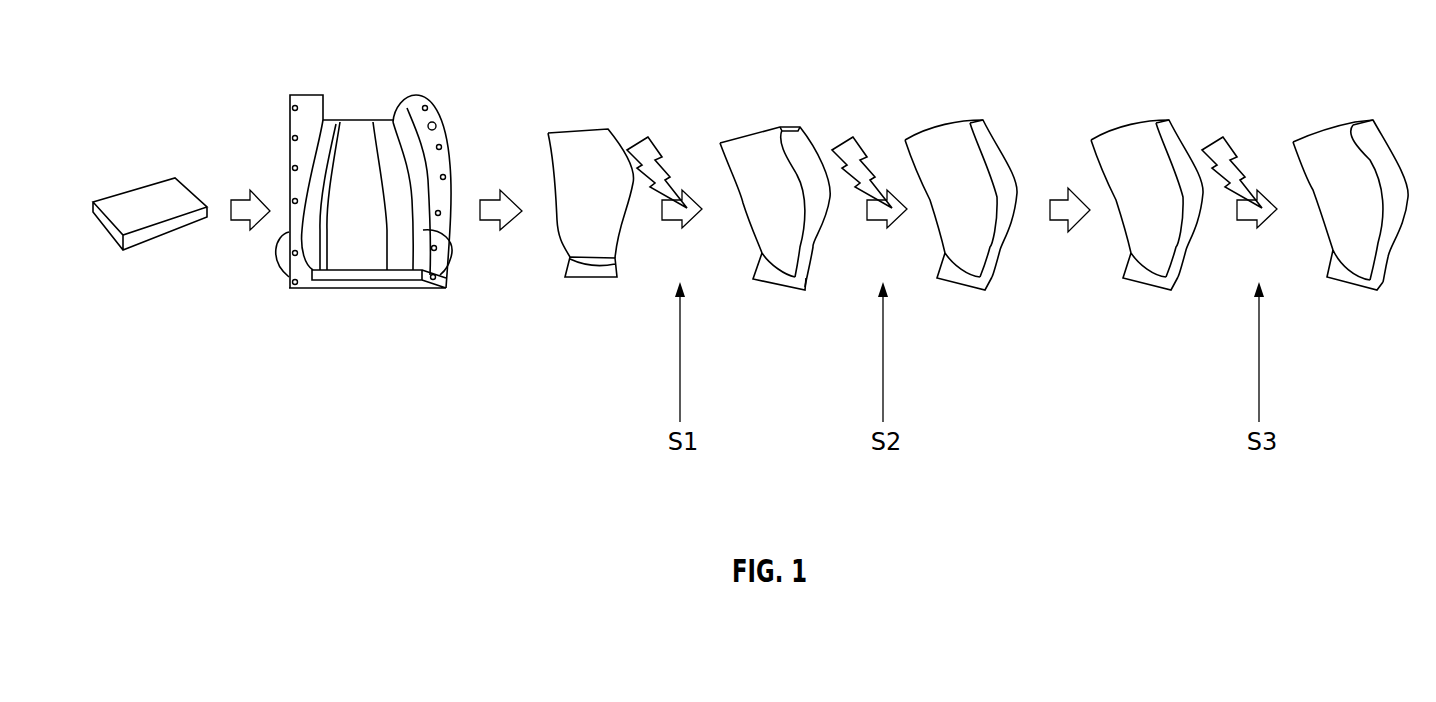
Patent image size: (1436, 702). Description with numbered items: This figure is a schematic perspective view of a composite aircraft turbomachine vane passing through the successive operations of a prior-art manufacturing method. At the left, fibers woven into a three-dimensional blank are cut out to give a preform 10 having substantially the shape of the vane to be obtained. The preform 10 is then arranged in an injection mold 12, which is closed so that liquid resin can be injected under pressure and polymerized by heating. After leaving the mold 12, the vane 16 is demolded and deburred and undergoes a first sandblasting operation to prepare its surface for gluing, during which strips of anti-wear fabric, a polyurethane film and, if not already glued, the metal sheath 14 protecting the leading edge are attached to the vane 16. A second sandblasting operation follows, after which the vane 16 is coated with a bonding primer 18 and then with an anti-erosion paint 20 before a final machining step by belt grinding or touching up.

The preform 10 is at (140, 207).
The injection mold 12 is at (293, 280).
The metal sheath 14 is at (797, 150).
The vane 16 is at (585, 172).
The bonding primer 18 is at (952, 175).
The anti-erosion paint 20 is at (1123, 168).